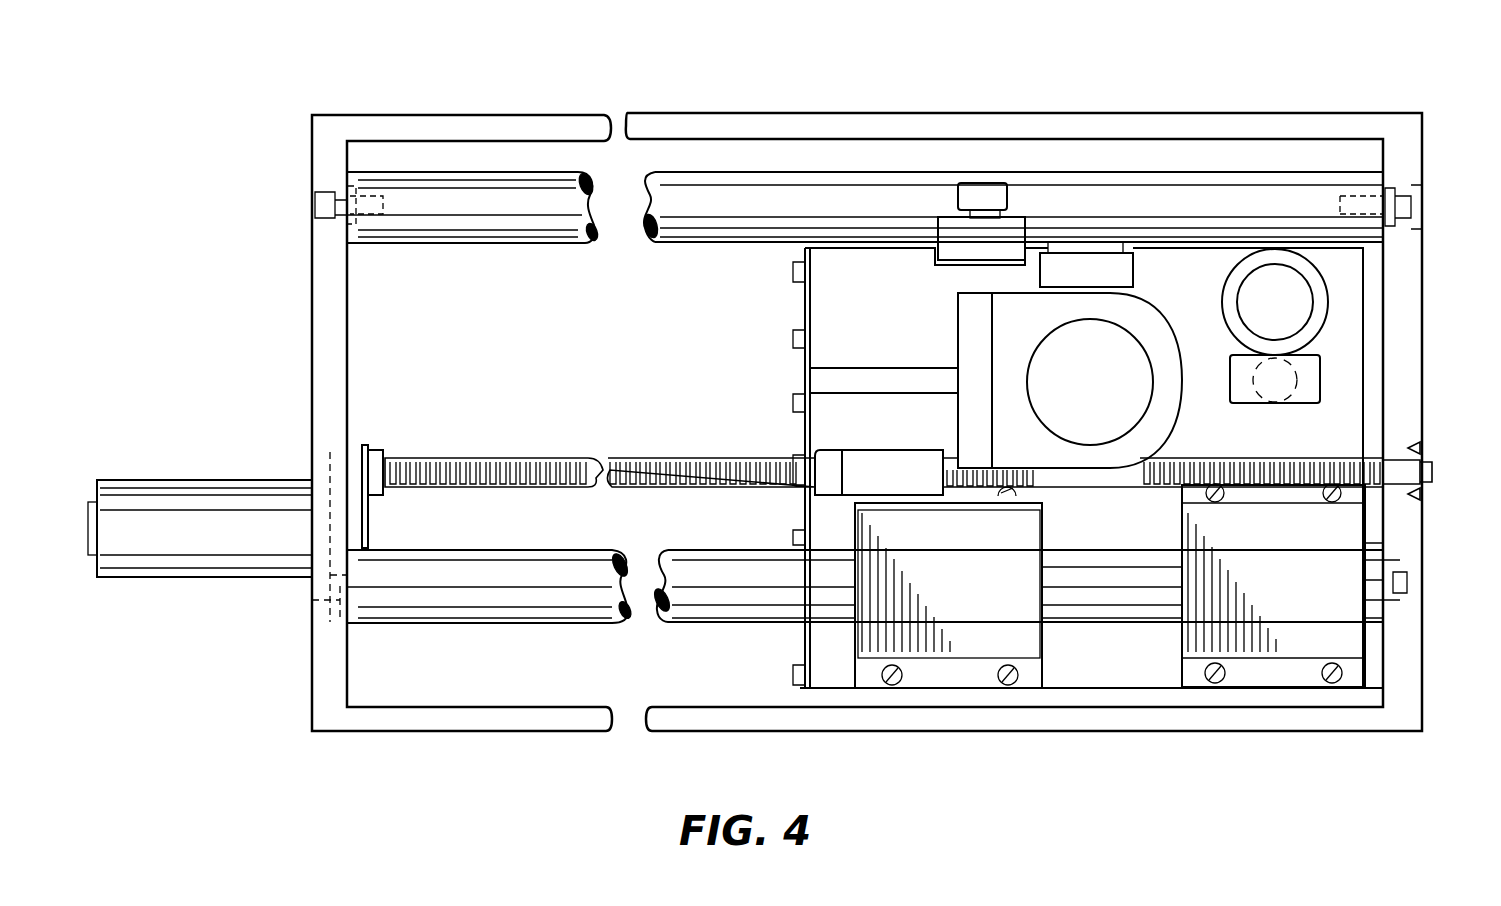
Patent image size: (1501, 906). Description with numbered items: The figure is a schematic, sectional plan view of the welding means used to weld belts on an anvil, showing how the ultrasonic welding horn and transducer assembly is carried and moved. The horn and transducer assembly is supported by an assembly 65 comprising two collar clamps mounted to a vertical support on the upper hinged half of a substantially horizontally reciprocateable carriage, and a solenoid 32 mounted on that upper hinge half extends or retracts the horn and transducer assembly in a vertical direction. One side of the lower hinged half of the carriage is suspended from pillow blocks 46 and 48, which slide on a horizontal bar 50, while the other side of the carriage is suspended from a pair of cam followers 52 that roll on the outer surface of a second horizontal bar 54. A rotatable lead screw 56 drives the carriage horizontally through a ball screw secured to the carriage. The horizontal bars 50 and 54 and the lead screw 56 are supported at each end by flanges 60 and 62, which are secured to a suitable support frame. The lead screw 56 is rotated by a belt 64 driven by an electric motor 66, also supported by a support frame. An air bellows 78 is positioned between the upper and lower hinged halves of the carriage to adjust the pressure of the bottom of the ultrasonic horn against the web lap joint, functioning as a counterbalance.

The solenoid 32 is at (1322, 308).
The pillow block 46 is at (1042, 640).
The pillow block 48 is at (1180, 643).
The horizontal bar 50 is at (540, 590).
The cam followers 52 is at (1005, 190).
The horizontal bar 54 is at (757, 180).
The lead screw 56 is at (572, 460).
The flange 60 is at (316, 340).
The flange 62 is at (1424, 303).
The belt 64 is at (365, 447).
The assembly 65 is at (1163, 322).
The electric motor 66 is at (233, 556).
The air bellows 78 is at (1320, 383).